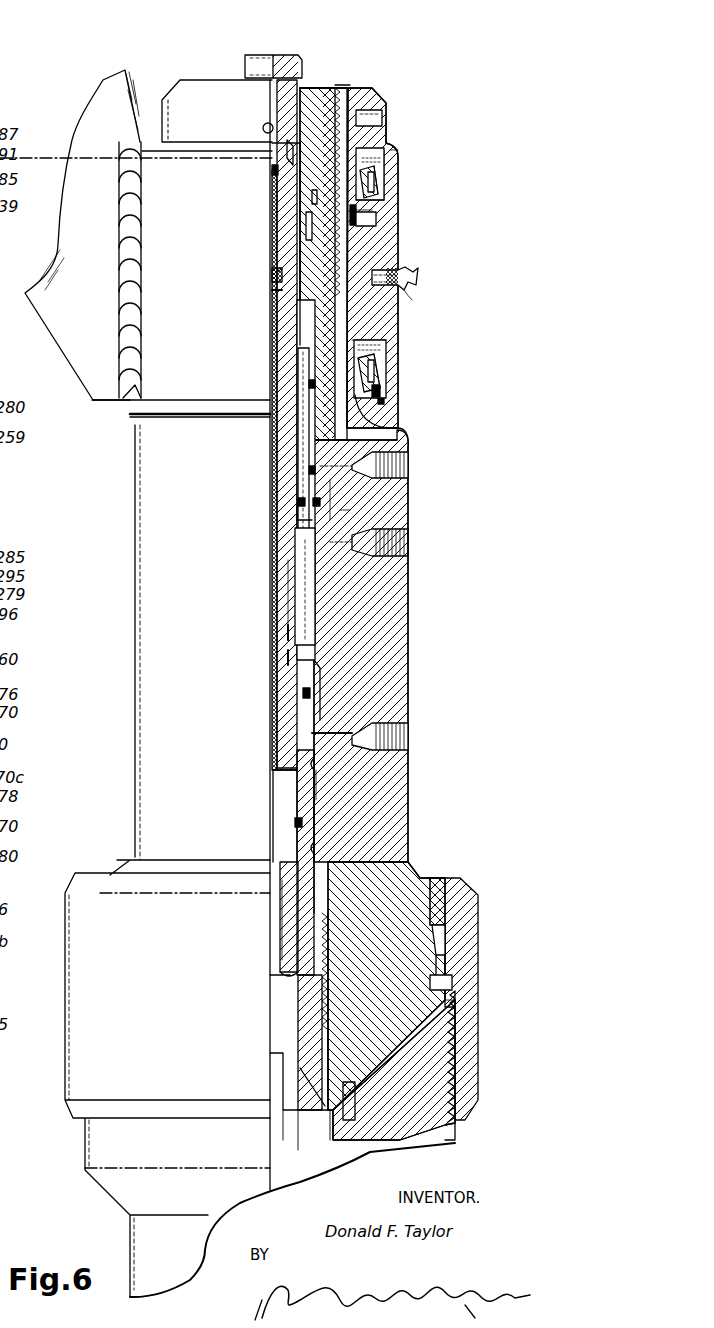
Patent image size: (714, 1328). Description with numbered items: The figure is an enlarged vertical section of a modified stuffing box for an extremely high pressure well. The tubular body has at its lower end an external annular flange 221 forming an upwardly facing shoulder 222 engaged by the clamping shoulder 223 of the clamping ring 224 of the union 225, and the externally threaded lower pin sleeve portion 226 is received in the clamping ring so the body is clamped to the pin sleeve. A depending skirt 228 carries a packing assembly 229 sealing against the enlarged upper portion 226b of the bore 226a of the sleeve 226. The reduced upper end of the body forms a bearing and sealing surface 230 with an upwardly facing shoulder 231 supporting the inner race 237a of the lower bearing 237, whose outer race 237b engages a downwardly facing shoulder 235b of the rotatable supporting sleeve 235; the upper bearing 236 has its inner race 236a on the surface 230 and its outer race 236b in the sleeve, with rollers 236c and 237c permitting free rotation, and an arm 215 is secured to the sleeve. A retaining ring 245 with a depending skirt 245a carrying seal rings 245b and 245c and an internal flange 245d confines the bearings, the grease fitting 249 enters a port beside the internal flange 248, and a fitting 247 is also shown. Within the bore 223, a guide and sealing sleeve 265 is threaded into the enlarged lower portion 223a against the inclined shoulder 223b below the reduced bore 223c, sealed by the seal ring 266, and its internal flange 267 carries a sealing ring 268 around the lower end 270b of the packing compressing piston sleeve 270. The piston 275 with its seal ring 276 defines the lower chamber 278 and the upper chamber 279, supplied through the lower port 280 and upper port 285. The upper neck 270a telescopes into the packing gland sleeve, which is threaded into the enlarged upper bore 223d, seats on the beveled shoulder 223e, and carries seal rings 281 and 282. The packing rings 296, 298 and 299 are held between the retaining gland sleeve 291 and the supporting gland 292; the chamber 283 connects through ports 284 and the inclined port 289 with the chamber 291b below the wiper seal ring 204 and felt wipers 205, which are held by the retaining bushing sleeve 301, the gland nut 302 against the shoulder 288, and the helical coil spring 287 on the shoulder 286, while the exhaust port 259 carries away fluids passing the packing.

The resilient elastomeric seal ring 204 is at (280, 190).
The felt wipers 205 is at (276, 234).
The arm 215 is at (97, 112).
The external annular flange 221 is at (450, 948).
The upwardly facing shoulder 222 is at (448, 907).
The clamping shoulder / bore of the body 223 is at (318, 848).
The enlarged lower portion of the bore 223a is at (330, 1050).
The inclined shoulder 223b is at (320, 772).
The reduced upper portion of the bore 223c is at (332, 616).
The enlarged upper bore 223d is at (320, 197).
The beveled shoulder 223e is at (350, 522).
The clamping ring 224 is at (468, 989).
The union 225 is at (100, 935).
The lower pin sleeve portion 226 is at (452, 1135).
The bore of the sleeve 226a is at (324, 1180).
The enlarged upper portion of the bore 226b is at (358, 1072).
The depending annular flange or skirt 228 is at (338, 1172).
The external annular packing assembly 229 is at (366, 1107).
The rotatable bearing and sealing surface 230 is at (355, 256).
The upwardly facing shoulder 231 is at (384, 396).
The rotatable supporting sleeve 235 is at (132, 406).
The downwardly facing shoulder 235b is at (378, 356).
The upper bearing 236 is at (390, 186).
The inner race 236a is at (388, 180).
The outer race 236b is at (380, 201).
The rollers 236c is at (386, 183).
The lower bearing 237 is at (388, 363).
The inner race 237a is at (408, 438).
The outer race 237b is at (380, 360).
The rollers 237c is at (384, 382).
The retaining ring 245 is at (380, 104).
The depending skirt 245a is at (358, 160).
The external seal ring / lock screw 245b is at (398, 158).
The internal seal ring / threaded opening 245c is at (352, 96).
The internal annular flange 245d is at (330, 100).
The fitting 247 is at (412, 278).
The internal annular flange 248 is at (356, 244).
The grease fitting / O-ring 249 is at (412, 290).
The lateral exhaust port 259 is at (410, 463).
The elongate tubular guide and sealing sleeve 265 is at (308, 1010).
The external annular seal ring 266 is at (306, 803).
The internal annular flange 267 is at (312, 836).
The sealing ring 268 is at (294, 822).
The packing compressing piston sleeve 270 is at (282, 794).
The upper tubular neck 270a is at (290, 580).
The lower cylindrical end 270b is at (280, 935).
The piston 275 is at (322, 680).
The seal ring 276 is at (325, 702).
The lower pressure fluid chamber 278 is at (318, 760).
The chamber 279 is at (330, 597).
The packing gland sleeve / lower lateral port 280 is at (410, 733).
The external seal ring 281 is at (340, 500).
The internal seal ring 282 is at (298, 516).
The chamber 283 is at (294, 372).
The lateral ports 284 is at (308, 384).
The external annular seal ring / shoulder / upper control fluid port 285 is at (362, 264).
The upwardly facing shoulder 286 is at (268, 292).
The helical coil spring 287 is at (272, 278).
The shoulder 288 is at (290, 143).
The inclined lateral flow port 289 is at (278, 342).
The retaining gland sleeve 291 is at (300, 500).
The chamber 291b is at (270, 268).
The retaining supporting gland 292 is at (283, 742).
The sealing ring 296 is at (288, 556).
The sealing ring 298 is at (278, 632).
The sealing ring 299 is at (278, 658).
The retaining bushing sleeve 301 is at (262, 128).
The gland nut 302 is at (262, 62).